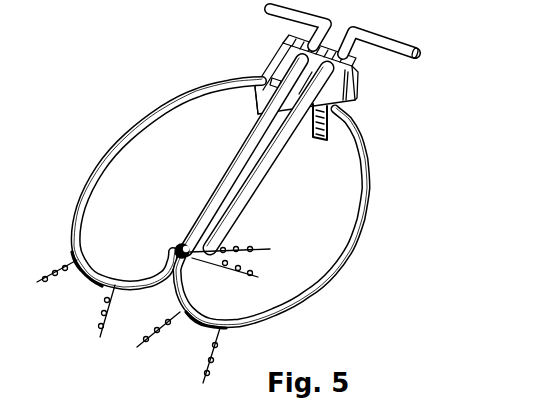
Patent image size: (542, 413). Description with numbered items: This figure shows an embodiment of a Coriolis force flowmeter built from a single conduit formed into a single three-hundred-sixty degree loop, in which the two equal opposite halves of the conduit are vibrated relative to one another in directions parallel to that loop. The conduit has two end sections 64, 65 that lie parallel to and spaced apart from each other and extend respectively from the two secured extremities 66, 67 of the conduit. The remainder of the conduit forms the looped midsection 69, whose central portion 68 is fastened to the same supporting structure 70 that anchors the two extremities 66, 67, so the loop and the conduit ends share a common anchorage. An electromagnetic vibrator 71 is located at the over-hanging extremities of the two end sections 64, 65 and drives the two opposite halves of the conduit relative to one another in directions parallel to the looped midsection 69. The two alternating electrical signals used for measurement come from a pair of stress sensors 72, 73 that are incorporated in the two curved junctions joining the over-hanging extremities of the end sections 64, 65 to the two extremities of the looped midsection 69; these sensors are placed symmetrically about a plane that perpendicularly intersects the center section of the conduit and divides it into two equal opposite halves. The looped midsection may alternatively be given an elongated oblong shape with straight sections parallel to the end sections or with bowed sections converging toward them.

The end section 64 is at (229, 163).
The end section 65 is at (257, 173).
The secured extremity 66 is at (283, 50).
The secured extremity 67 is at (358, 73).
The central portion 68 is at (318, 127).
The looped midsection 69 is at (322, 277).
The supporting structure 70 is at (263, 60).
The electromagnetic vibrator 71 is at (190, 230).
The stress sensor 72 is at (90, 278).
The stress sensor 73 is at (197, 318).